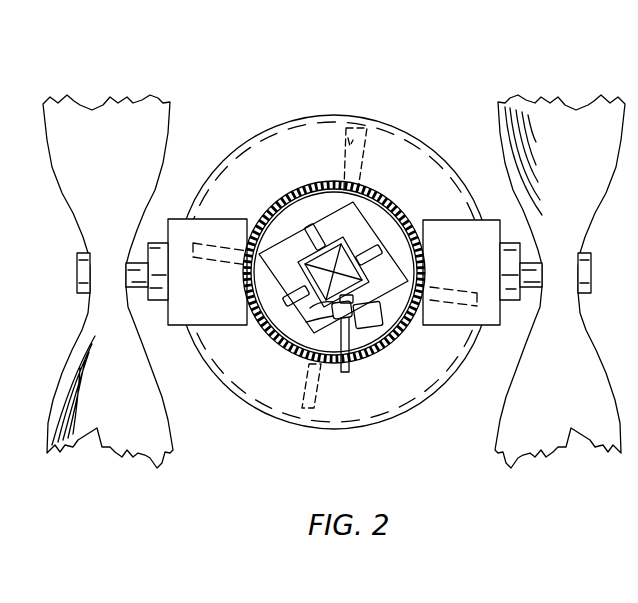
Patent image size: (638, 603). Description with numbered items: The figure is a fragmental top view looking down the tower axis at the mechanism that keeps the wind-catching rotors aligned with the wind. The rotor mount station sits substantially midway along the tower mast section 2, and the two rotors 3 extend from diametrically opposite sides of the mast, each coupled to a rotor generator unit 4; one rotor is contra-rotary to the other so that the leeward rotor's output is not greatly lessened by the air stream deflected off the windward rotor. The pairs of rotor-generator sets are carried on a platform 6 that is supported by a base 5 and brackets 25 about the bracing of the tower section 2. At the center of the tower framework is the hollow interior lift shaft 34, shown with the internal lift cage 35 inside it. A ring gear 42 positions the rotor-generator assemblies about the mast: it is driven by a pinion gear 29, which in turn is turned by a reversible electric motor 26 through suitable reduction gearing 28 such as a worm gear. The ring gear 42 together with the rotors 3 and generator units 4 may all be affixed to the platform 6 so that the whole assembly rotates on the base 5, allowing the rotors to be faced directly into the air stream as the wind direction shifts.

The tower mast section 2 is at (317, 228).
The rotor 3 is at (168, 142).
The rotor generator unit 4 is at (458, 220).
The base 5 is at (398, 134).
The platform 6 is at (289, 120).
The bracket 25 is at (347, 127).
The reversible electric motor 26 is at (381, 334).
The reduction gearing 28 is at (331, 346).
The pinion gear 29 is at (349, 373).
The lift shaft 34 is at (302, 366).
The lift cage 35 is at (294, 332).
The ring gear 42 is at (386, 214).